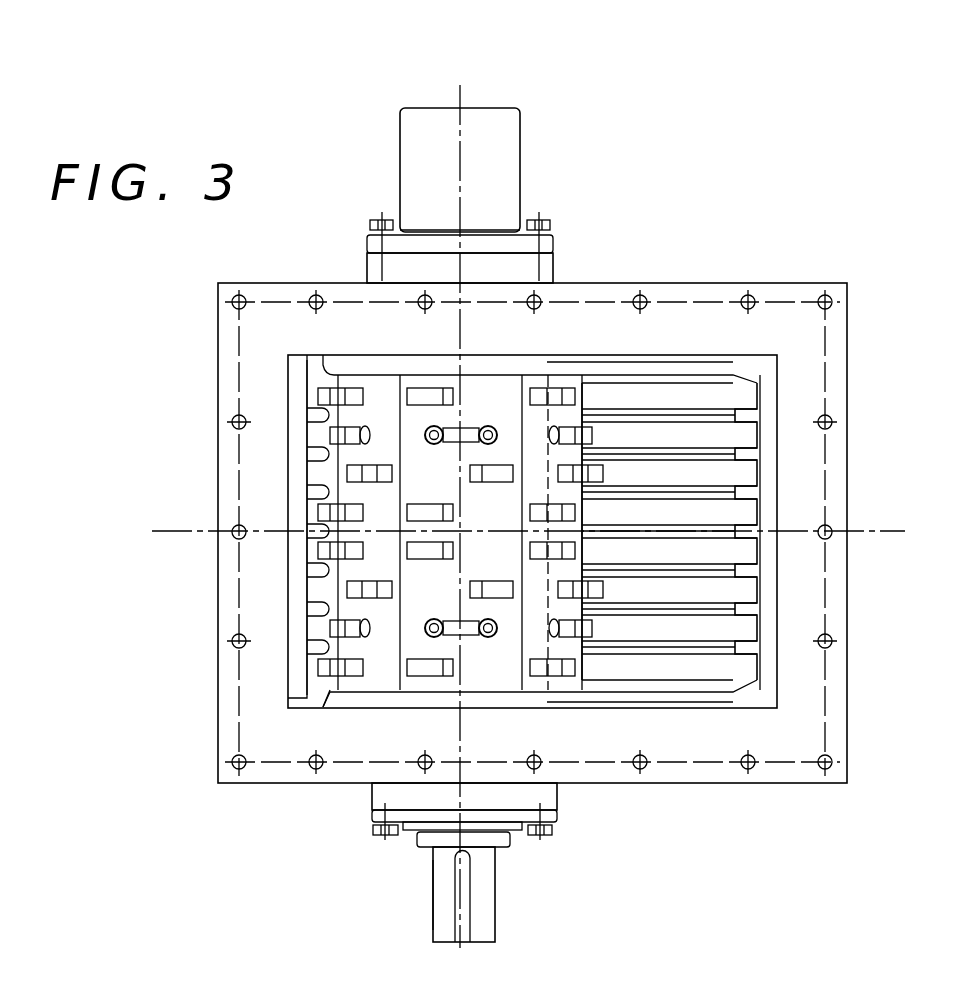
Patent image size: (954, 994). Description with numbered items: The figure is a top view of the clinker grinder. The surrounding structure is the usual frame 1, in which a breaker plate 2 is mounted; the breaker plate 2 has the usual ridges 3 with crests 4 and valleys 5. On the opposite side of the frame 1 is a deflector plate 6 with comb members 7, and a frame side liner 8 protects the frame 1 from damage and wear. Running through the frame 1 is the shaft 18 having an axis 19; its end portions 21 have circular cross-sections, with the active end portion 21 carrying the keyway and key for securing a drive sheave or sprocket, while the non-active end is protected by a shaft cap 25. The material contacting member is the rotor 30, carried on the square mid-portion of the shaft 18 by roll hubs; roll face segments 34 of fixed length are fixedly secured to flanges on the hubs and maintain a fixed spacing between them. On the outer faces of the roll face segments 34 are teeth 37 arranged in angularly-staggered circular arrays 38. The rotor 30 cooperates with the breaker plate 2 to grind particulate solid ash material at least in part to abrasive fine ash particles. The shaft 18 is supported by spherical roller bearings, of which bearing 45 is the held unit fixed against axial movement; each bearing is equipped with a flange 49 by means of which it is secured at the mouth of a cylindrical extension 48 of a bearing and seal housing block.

The frame 1 is at (848, 326).
The breaker plate 2 is at (770, 377).
The ridges 3 is at (760, 414).
The crests 4 is at (737, 412).
The valleys 5 is at (752, 437).
The deflector plate 6 is at (302, 558).
The comb members 7 is at (320, 453).
The frame side liner 8 is at (353, 697).
The shaft 18 is at (495, 893).
The axis 19 is at (463, 932).
The end portions 21 is at (433, 900).
The shaft cap 25 is at (523, 153).
The rotor 30 is at (418, 571).
The roll face segments 34 is at (410, 417).
The teeth 37 is at (503, 598).
The angularly-staggered circular arrays 38 is at (424, 512).
The spherical roller bearing 45 is at (386, 849).
The cylindrical extensions 48 is at (548, 262).
The flanges 49 is at (553, 818).